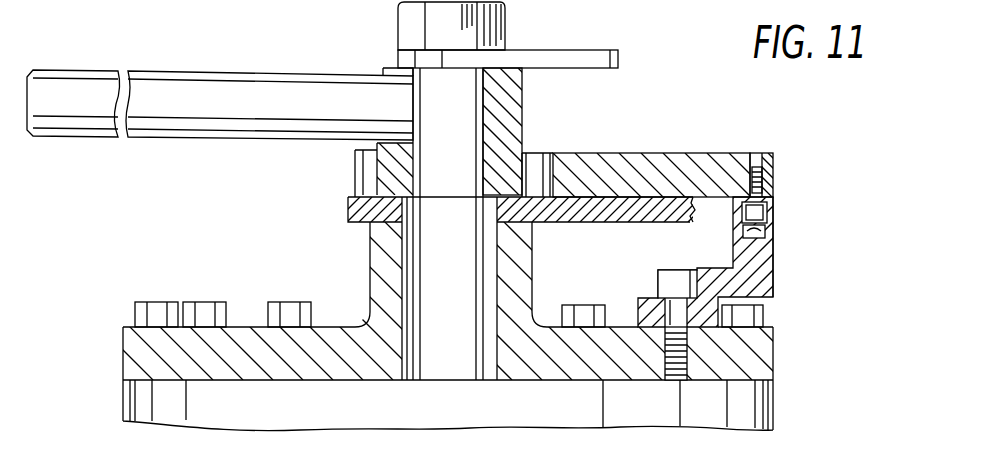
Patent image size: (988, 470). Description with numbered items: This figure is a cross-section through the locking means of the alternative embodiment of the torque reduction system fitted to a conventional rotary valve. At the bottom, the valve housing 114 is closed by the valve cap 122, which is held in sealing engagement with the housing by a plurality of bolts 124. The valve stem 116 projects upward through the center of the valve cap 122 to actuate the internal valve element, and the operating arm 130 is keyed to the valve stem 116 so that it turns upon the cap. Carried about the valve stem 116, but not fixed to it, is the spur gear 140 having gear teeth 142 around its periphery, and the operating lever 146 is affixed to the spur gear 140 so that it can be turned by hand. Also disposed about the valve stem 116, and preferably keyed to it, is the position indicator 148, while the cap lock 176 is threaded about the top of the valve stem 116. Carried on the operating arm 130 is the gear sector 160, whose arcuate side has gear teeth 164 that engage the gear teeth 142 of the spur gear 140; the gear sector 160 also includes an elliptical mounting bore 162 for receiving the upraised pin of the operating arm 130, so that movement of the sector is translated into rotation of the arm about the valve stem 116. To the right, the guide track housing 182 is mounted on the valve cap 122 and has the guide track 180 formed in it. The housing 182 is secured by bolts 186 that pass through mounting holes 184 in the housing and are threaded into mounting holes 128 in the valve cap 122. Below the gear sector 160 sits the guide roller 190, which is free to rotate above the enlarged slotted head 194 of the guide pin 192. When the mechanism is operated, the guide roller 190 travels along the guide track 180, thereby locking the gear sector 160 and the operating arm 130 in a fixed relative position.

The valve housing 114 is at (128, 395).
The valve stem 116 is at (430, 252).
The valve cap 122 is at (127, 343).
The bolts 124 is at (200, 302).
The mounting holes 128 is at (690, 358).
The operating arm 130 is at (352, 208).
The spur gear 140 is at (510, 92).
The gear teeth 142 is at (537, 158).
The operating lever 146 is at (188, 85).
The position indicator 148 is at (575, 51).
The gear sector 160 is at (697, 165).
The elliptical mounting bore 162 is at (758, 162).
The gear teeth 164 is at (548, 183).
The cap lock 176 is at (412, 20).
The guide track 180 is at (773, 235).
The guide track housing 182 is at (760, 275).
The mounting holes 184 is at (773, 315).
The bolts 186 is at (656, 275).
The guide roller 190 is at (772, 208).
The guide pin 192 is at (762, 178).
The enlarged slotted head 194 is at (743, 237).